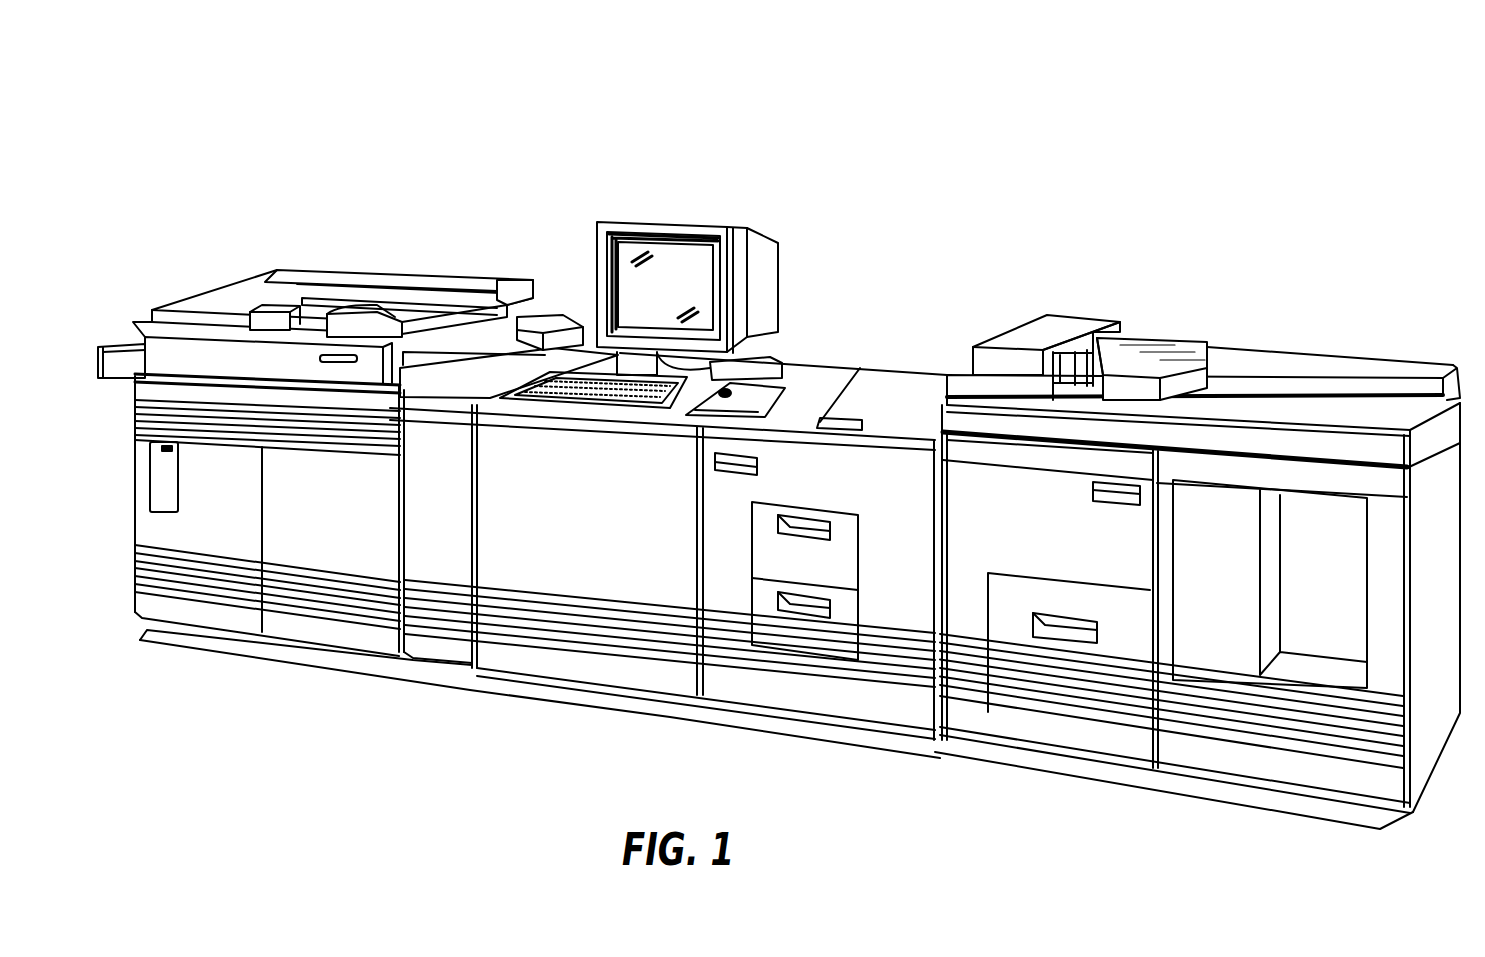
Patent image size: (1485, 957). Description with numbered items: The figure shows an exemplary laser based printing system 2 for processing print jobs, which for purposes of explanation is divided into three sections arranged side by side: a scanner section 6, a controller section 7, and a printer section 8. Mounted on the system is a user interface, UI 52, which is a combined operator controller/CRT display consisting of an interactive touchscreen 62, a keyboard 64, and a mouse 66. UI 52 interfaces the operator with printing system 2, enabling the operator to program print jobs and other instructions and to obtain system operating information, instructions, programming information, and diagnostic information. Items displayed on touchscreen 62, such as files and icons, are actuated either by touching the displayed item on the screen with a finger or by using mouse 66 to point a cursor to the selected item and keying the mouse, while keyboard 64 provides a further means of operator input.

The printing system 2 is at (928, 100).
The scanner section 6 is at (392, 243).
The controller section 7 is at (118, 518).
The printer section 8 is at (1186, 300).
The UI 52 is at (701, 203).
The interactive touchscreen 62 is at (628, 293).
The keyboard 64 is at (580, 408).
The mouse 66 is at (686, 416).